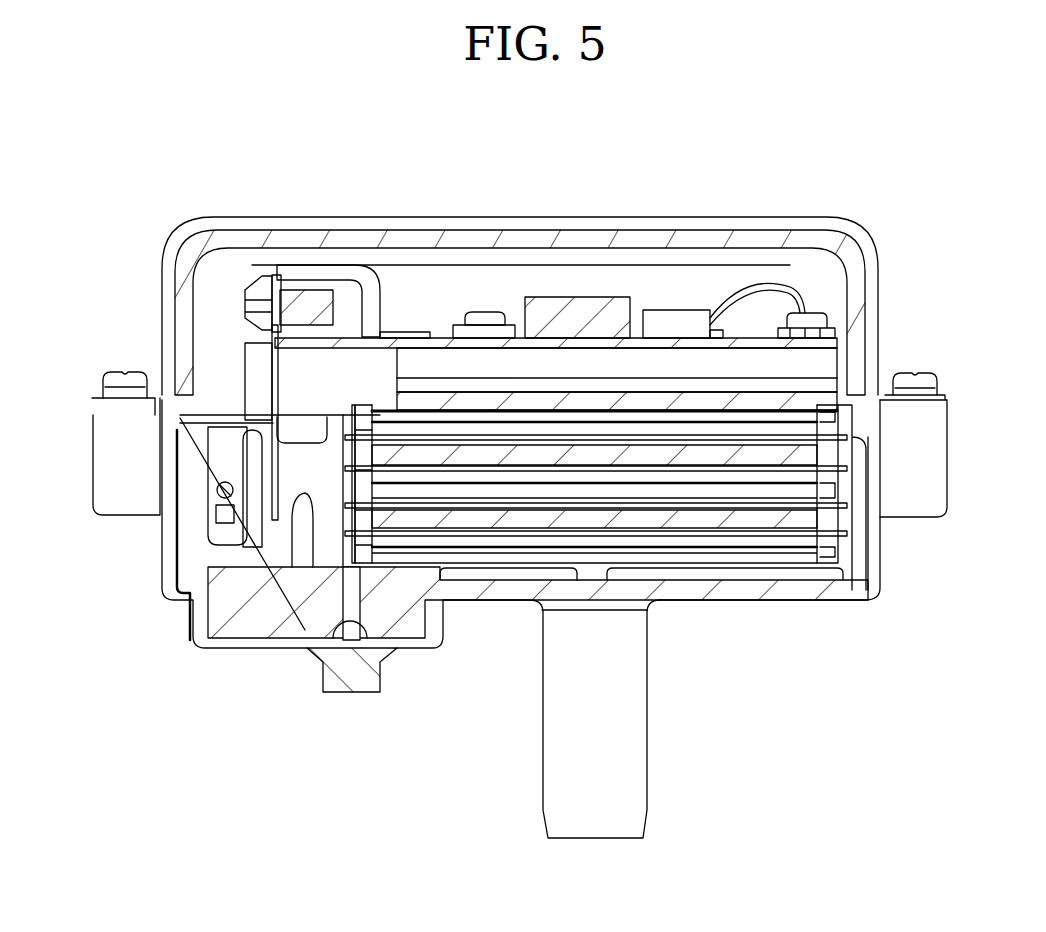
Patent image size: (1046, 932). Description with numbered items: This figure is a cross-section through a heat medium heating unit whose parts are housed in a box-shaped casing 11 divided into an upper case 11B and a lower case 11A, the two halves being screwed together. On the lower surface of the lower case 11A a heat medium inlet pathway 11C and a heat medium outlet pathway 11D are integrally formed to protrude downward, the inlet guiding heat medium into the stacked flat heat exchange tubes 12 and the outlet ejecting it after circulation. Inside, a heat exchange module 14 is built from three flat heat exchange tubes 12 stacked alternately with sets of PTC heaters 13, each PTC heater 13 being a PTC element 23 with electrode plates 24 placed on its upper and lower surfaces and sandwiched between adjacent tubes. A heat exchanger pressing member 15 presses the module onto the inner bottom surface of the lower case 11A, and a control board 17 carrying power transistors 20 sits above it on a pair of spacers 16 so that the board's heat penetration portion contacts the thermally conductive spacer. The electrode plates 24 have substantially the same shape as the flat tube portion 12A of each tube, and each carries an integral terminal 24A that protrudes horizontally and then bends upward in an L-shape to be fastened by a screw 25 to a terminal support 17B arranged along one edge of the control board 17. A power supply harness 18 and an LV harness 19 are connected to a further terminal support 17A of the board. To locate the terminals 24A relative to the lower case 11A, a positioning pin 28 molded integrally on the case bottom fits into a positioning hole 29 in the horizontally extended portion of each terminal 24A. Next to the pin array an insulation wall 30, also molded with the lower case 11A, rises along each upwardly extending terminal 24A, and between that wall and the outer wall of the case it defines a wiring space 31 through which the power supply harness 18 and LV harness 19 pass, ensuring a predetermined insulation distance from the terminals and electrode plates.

The casing 11 is at (509, 478).
The lower case 11A is at (519, 605).
The upper case 11B is at (458, 235).
The heat medium inlet pathway 11C is at (672, 719).
The heat medium outlet pathway 11D is at (623, 795).
The flat heat exchange tube 12 is at (813, 415).
The flat tube portion 12A is at (737, 580).
The PTC heater 13 is at (549, 437).
The heat exchange module 14 is at (655, 429).
The heat exchanger pressing member 15 is at (720, 400).
The spacer 16 is at (577, 358).
The control board 17 is at (492, 343).
The terminal support 17A is at (315, 280).
The terminal support 17B is at (297, 307).
The power supply harness 18 is at (144, 515).
The LV harness 19 is at (223, 510).
The power transistor 20 is at (675, 320).
The PTC element 23 is at (608, 536).
The electrode plate 24 is at (399, 545).
The terminal 24A is at (272, 365).
The screw 25 is at (245, 303).
The positioning pin 28 is at (316, 445).
The positioning hole 29 is at (277, 552).
The insulation wall 30 is at (250, 480).
The wiring space 31 is at (227, 458).